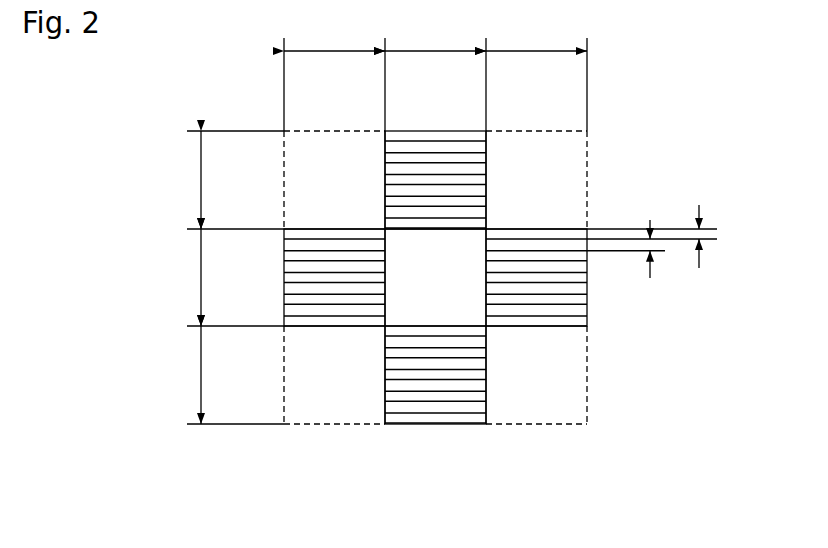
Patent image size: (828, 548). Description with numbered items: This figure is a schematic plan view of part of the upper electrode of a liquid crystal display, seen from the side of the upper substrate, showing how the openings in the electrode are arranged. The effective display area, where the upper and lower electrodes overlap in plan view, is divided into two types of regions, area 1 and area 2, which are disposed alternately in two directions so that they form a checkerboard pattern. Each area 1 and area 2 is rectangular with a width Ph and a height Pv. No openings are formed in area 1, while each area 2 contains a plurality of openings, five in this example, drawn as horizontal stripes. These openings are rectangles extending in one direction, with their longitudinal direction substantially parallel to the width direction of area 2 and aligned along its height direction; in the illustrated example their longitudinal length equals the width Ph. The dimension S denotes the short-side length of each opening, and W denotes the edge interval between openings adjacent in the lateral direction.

The area 1 is at (337, 193).
The area 2 is at (376, 238).
The width Ph is at (435, 32).
The height Pv is at (175, 277).
The short-side length S is at (710, 231).
The edge interval W is at (662, 253).